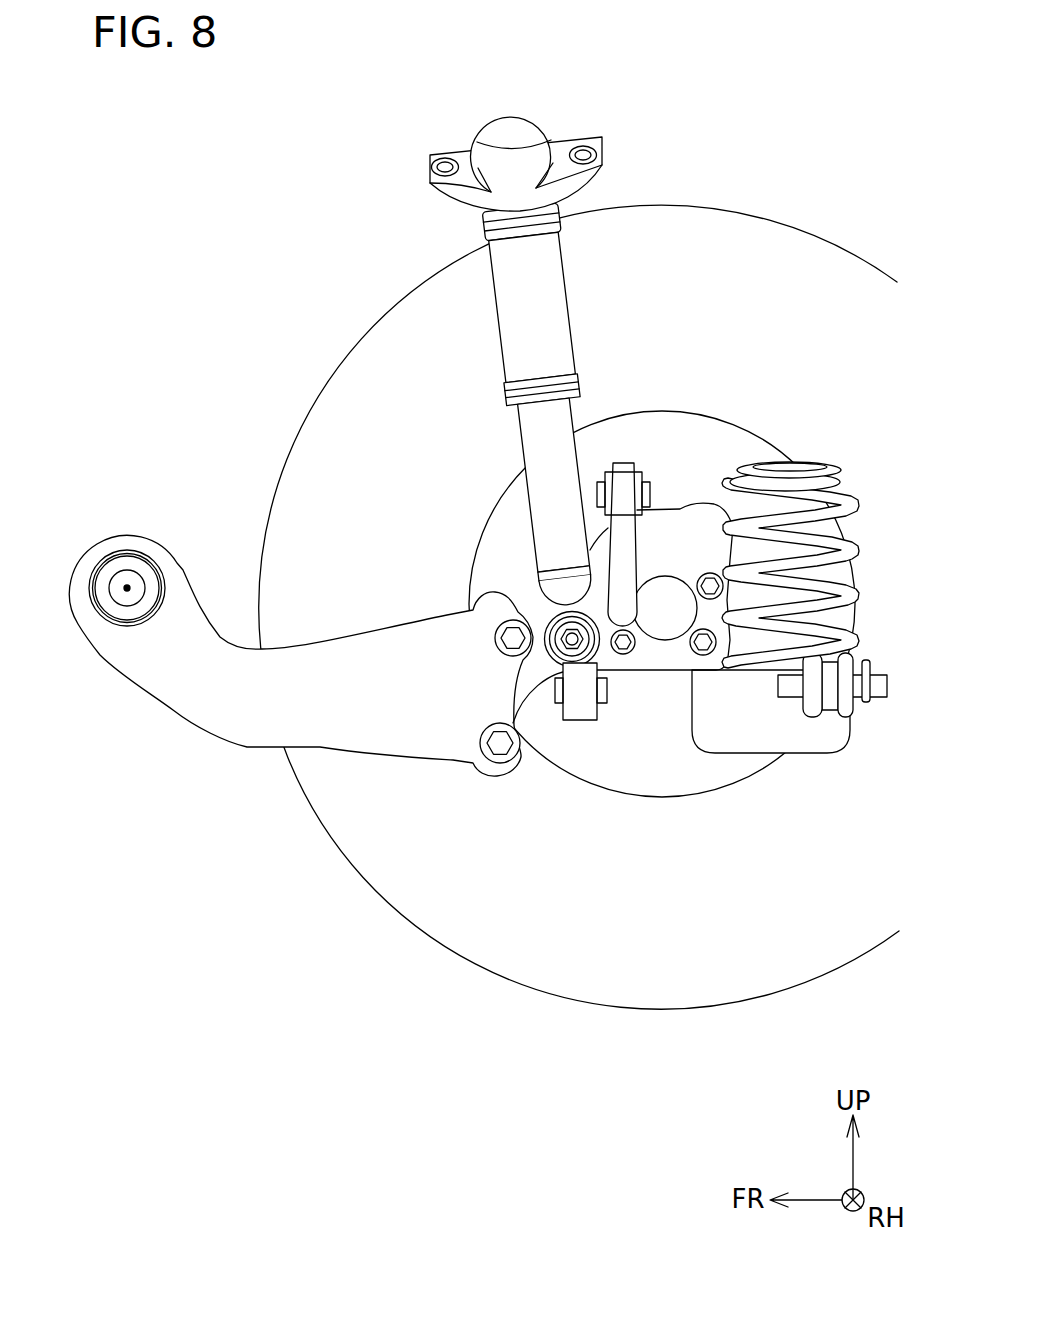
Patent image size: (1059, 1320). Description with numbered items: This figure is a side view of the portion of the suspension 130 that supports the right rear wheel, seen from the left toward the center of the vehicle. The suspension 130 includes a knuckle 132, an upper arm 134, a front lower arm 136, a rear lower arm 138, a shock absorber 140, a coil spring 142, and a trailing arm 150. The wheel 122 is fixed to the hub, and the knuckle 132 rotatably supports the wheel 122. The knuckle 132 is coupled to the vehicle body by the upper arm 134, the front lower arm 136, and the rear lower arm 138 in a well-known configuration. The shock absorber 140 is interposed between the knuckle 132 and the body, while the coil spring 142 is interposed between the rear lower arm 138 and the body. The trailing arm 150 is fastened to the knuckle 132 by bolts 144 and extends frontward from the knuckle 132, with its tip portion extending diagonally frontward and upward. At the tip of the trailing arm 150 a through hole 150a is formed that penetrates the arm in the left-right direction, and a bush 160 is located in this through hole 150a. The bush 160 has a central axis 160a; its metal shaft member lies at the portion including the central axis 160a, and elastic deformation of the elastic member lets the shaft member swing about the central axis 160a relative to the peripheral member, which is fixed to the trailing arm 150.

The wheel 122 is at (803, 228).
The suspension 130 is at (470, 493).
The knuckle 132 is at (668, 530).
The upper arm 134 is at (622, 478).
The front lower arm 136 is at (580, 697).
The rear lower arm 138 is at (808, 737).
The shock absorber 140 is at (520, 333).
The coil spring 142 is at (809, 462).
The bolts 144 is at (510, 640).
The trailing arm 150 is at (270, 703).
The through hole 150a is at (158, 566).
The bush 160 is at (126, 541).
The central axis 160a is at (124, 588).